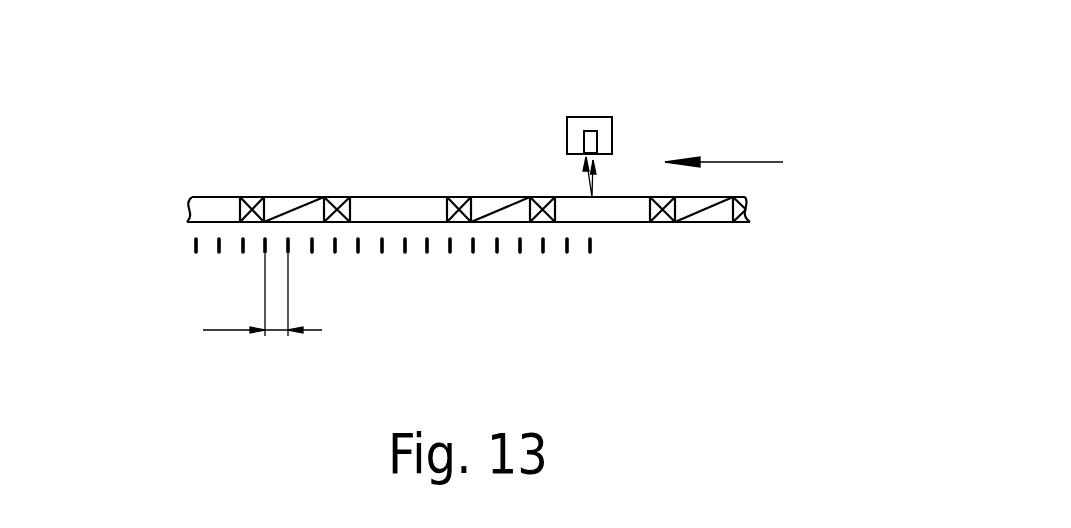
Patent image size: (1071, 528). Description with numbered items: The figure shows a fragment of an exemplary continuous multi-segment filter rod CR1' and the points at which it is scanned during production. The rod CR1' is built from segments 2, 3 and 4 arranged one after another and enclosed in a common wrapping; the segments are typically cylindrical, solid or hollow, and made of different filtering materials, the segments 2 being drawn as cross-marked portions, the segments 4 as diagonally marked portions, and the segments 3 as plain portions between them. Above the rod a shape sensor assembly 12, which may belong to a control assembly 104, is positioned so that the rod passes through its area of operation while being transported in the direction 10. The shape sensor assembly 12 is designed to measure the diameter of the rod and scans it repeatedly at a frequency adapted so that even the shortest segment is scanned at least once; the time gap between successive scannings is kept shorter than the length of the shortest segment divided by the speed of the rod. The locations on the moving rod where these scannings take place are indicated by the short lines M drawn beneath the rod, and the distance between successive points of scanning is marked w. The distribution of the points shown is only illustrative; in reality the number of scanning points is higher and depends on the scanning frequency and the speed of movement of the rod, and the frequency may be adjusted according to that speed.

The segment 2 is at (253, 200).
The segment 3 is at (407, 205).
The segment 4 is at (298, 207).
The direction of transport 10 is at (783, 162).
The shape sensor assembly 12 is at (585, 135).
The control assembly 104 is at (592, 119).
The continuous multi-segment filter rod CR1' is at (122, 125).
The short lines M is at (565, 275).
The distance between successive points of scanning w is at (262, 295).